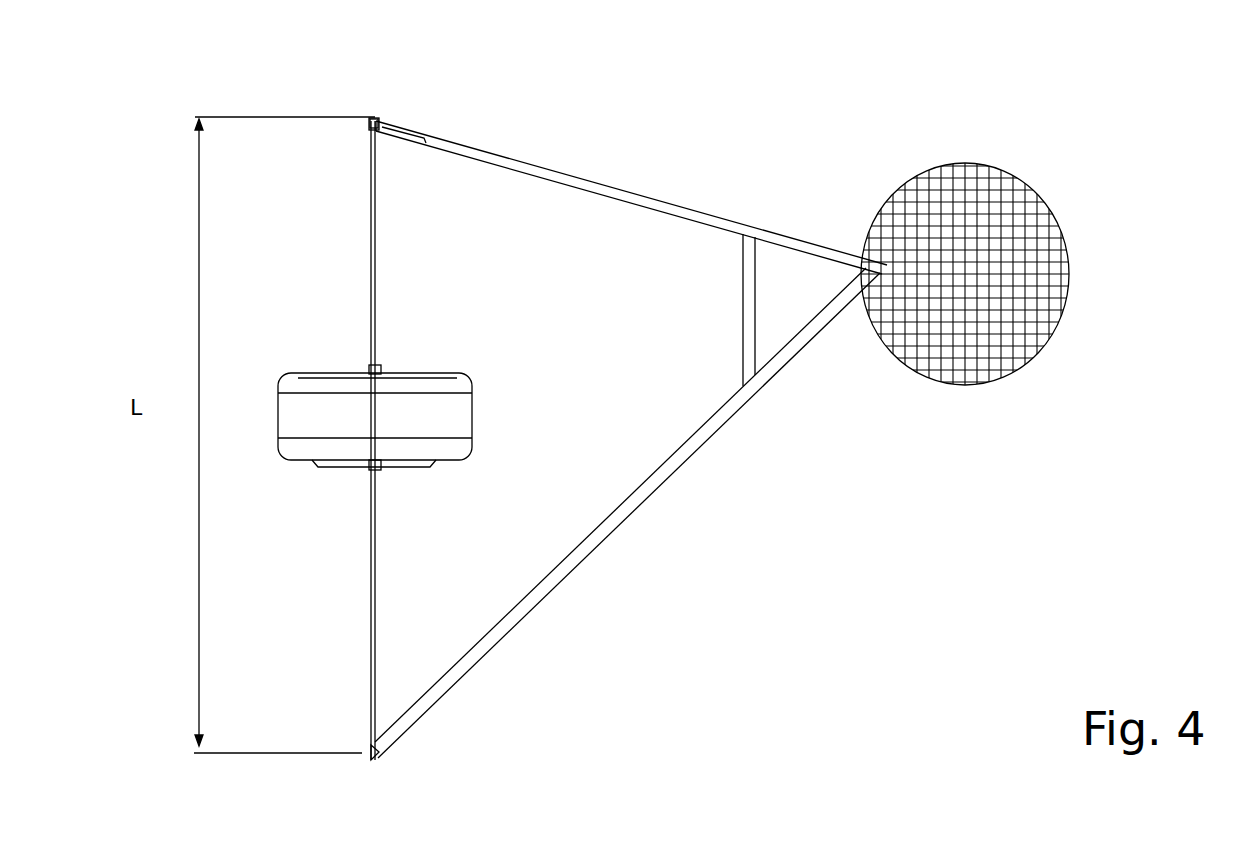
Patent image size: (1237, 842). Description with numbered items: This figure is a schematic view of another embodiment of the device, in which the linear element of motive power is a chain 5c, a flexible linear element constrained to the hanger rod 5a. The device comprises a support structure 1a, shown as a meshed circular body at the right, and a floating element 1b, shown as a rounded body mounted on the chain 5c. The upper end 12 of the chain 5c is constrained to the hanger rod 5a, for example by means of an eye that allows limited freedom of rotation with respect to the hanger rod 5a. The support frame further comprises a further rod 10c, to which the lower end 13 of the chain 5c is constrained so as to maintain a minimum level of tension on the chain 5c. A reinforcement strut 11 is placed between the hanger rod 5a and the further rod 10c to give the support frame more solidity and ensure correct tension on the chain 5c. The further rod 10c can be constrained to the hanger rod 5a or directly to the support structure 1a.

The support structure 1a is at (1017, 268).
The floating element 1b is at (432, 420).
The hanger rod 5a is at (552, 172).
The chain 5c is at (376, 250).
The further rod 10c is at (600, 540).
The reinforcement strut 11 is at (747, 333).
The upper end 12 is at (373, 119).
The lower end 13 is at (377, 752).